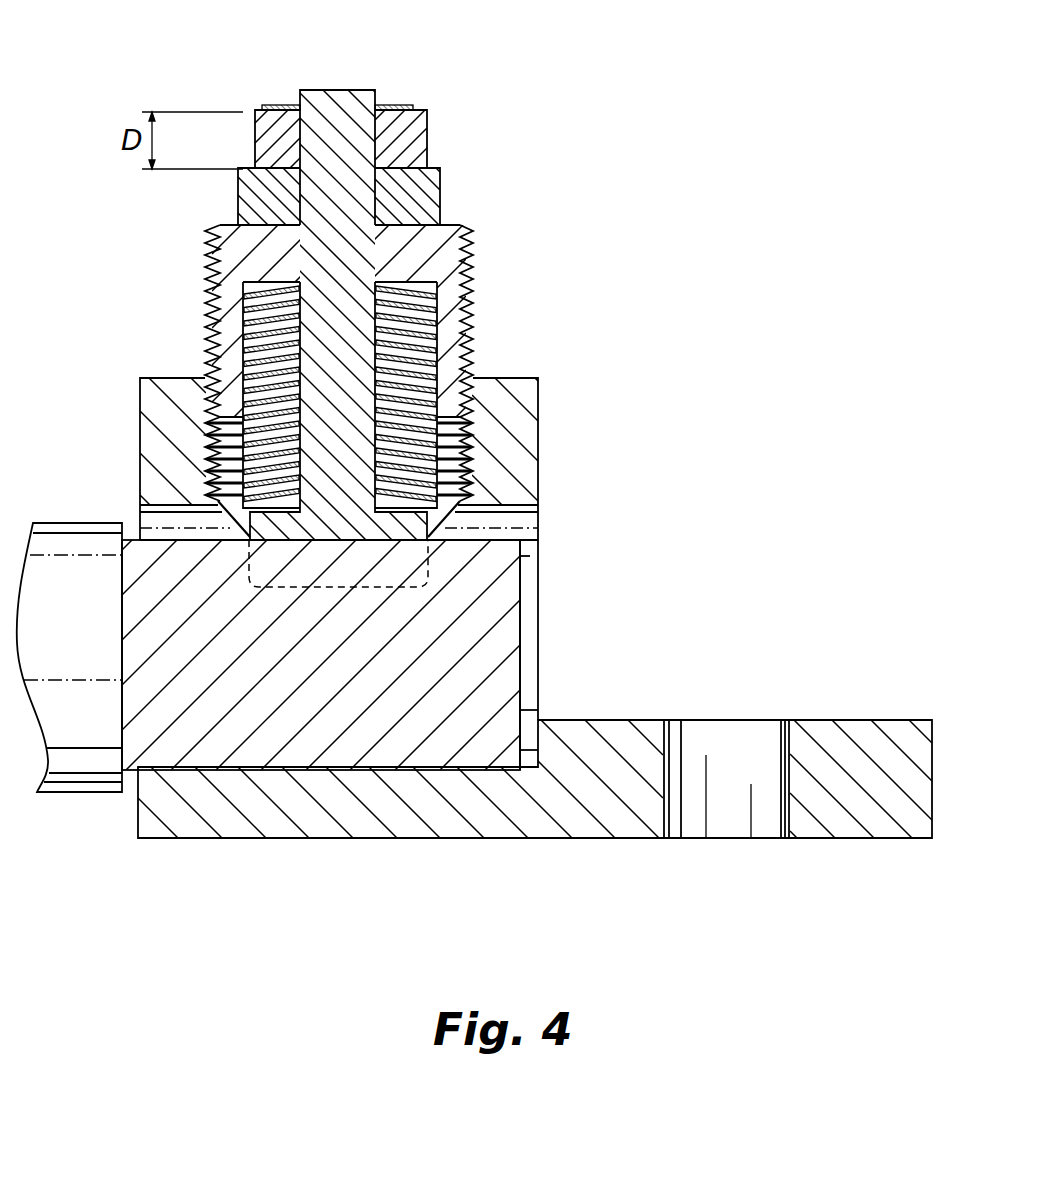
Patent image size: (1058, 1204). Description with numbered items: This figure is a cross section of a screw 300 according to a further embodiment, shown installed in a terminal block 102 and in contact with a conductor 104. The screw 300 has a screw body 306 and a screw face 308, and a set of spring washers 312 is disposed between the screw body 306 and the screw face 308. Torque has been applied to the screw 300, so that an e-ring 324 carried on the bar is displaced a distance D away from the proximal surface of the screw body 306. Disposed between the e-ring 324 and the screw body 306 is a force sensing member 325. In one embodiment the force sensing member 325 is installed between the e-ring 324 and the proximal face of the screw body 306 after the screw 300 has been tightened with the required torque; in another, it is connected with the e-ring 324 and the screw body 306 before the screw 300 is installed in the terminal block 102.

The screw 300 is at (336, 278).
The e-ring 324 is at (399, 103).
The force sensing member 325 is at (427, 130).
The screw body 306 is at (483, 312).
The screw face 308 is at (480, 495).
The spring washers 312 is at (242, 336).
The conductor 104 is at (503, 632).
The terminal block 102 is at (772, 698).